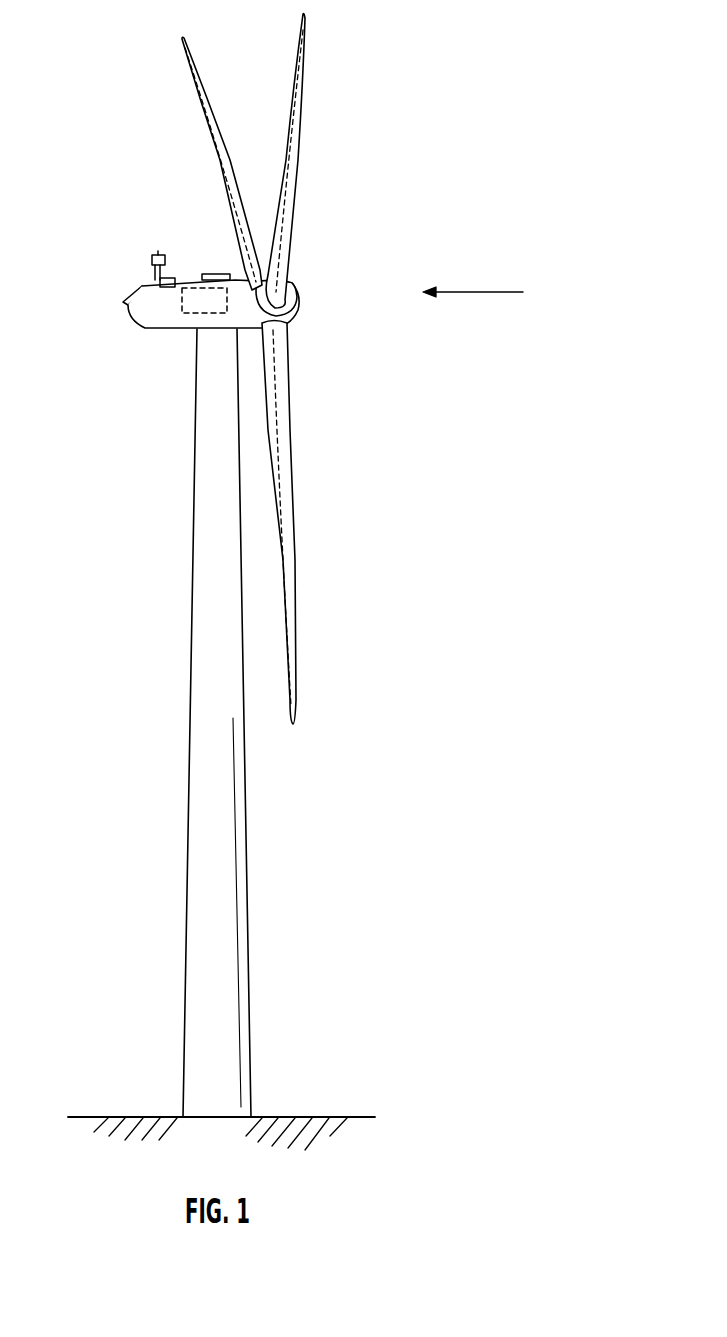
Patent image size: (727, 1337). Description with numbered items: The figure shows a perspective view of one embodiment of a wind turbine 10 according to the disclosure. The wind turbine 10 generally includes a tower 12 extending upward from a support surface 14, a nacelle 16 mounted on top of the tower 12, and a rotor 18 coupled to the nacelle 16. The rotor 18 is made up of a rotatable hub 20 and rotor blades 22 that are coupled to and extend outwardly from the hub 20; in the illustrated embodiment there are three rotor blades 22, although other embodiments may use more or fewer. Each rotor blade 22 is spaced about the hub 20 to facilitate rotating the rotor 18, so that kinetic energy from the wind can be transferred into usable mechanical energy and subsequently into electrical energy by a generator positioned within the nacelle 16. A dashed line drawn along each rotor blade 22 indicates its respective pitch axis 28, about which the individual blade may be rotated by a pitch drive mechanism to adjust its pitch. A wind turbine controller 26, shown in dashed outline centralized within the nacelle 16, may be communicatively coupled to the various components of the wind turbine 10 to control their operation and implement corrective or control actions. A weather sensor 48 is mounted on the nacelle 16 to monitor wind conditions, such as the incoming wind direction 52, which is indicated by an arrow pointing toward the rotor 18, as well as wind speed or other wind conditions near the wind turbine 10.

The wind turbine 10 is at (423, 93).
The tower 12 is at (203, 787).
The support surface 14 is at (141, 1117).
The nacelle 16 is at (162, 330).
The rotor 18 is at (307, 281).
The rotatable hub 20 is at (298, 308).
The rotor blade 22 is at (218, 120).
The wind turbine controller 26 is at (197, 270).
The pitch axis 28 is at (232, 205).
The weather sensor 48 is at (153, 260).
The incoming wind direction 52 is at (486, 292).